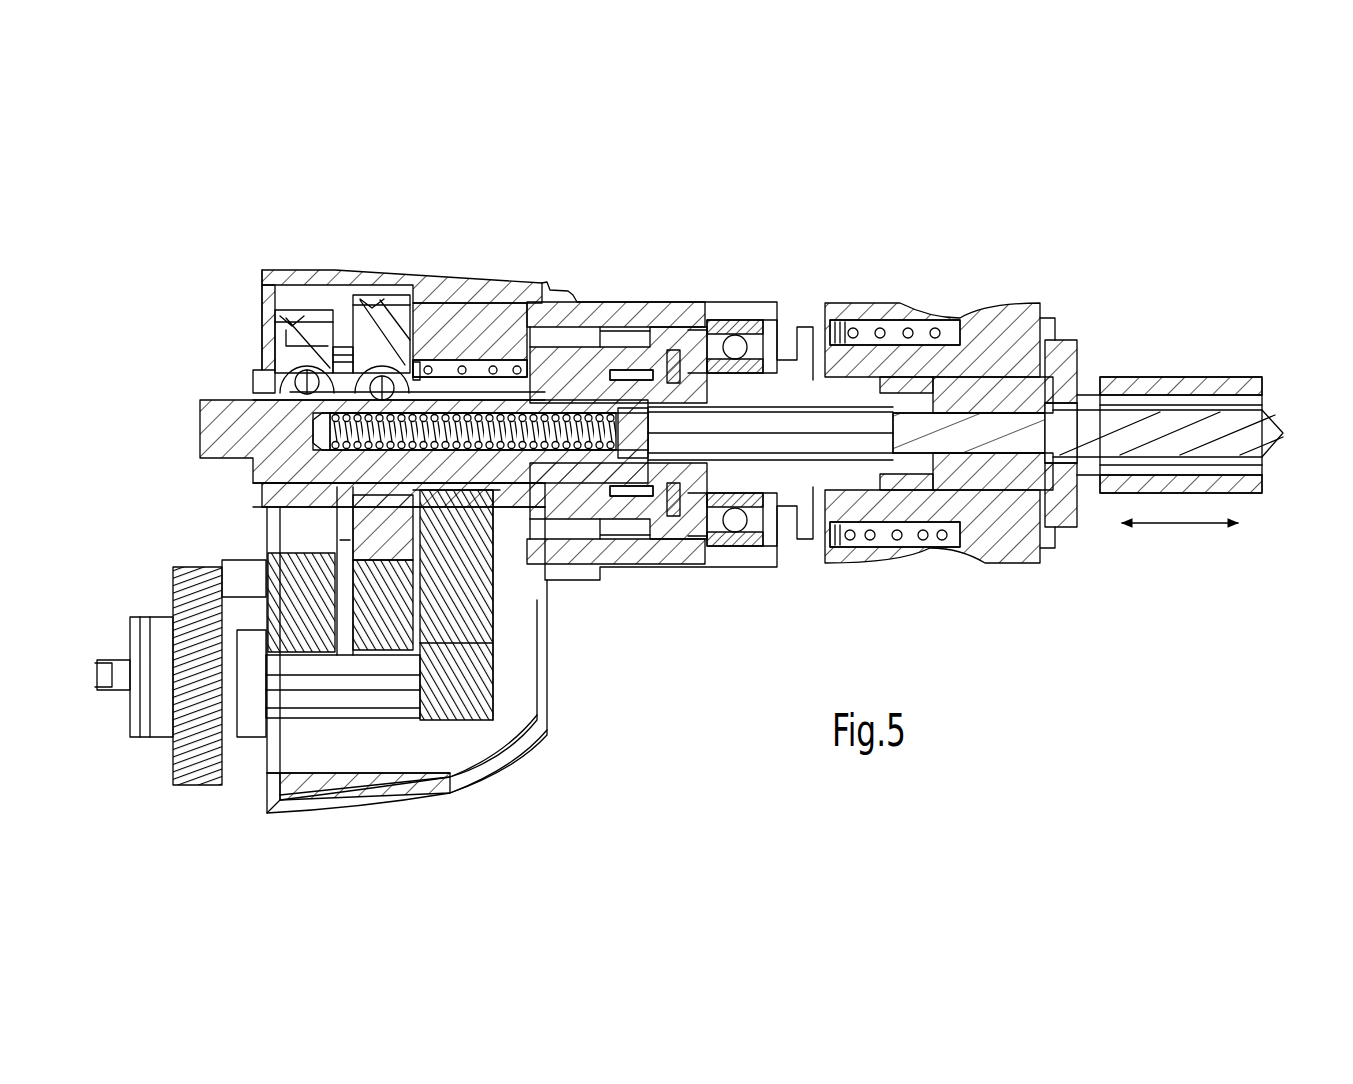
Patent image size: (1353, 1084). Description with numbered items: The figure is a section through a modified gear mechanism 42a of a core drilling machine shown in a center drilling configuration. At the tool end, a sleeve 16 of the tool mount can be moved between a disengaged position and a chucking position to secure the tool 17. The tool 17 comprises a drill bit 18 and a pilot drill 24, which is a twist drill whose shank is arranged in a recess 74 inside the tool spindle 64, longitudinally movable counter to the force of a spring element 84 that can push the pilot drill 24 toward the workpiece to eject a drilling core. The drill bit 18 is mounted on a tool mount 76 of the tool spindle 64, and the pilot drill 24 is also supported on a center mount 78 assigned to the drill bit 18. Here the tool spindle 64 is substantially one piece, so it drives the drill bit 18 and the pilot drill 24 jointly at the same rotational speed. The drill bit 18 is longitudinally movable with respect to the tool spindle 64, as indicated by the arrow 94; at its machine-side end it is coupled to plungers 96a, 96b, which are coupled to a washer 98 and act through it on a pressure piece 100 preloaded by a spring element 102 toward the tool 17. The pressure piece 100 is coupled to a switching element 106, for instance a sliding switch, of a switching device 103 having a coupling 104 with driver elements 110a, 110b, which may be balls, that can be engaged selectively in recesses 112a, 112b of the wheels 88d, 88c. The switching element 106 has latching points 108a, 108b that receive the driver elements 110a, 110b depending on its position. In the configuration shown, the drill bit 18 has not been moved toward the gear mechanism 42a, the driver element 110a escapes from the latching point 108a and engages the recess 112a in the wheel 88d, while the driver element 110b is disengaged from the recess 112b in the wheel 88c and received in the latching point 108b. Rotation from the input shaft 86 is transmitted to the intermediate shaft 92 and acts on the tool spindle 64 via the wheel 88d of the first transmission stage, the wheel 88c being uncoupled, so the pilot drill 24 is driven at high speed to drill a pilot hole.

The sleeve 16 is at (958, 303).
The tool 17 is at (1163, 327).
The drill bit 18 is at (1205, 370).
The pilot drill 24 is at (1283, 466).
The gear mechanism 42a is at (185, 478).
The tool spindle 64 is at (196, 430).
The recess 74 is at (767, 412).
The tool mount 76 is at (1020, 477).
The center mount 78 is at (1062, 427).
The spring element 84 is at (548, 457).
The input shaft 86 is at (367, 687).
The wheel 88c is at (505, 590).
The wheel 88d is at (303, 530).
The intermediate shaft 92 is at (250, 568).
The arrow 94 is at (1173, 528).
The plunger 96a is at (808, 398).
The plunger 96b is at (822, 548).
The washer 98 is at (688, 335).
The pressure piece 100 is at (573, 362).
The spring element 102 is at (458, 365).
The switching device 103 is at (246, 348).
The coupling 104 is at (385, 330).
The switching element 106 is at (485, 380).
The latching point 108a is at (255, 460).
The latching point 108b is at (350, 396).
The driver element 110a is at (262, 328).
The driver element 110b is at (352, 322).
The recess 112a is at (245, 392).
The recess 112b is at (408, 365).